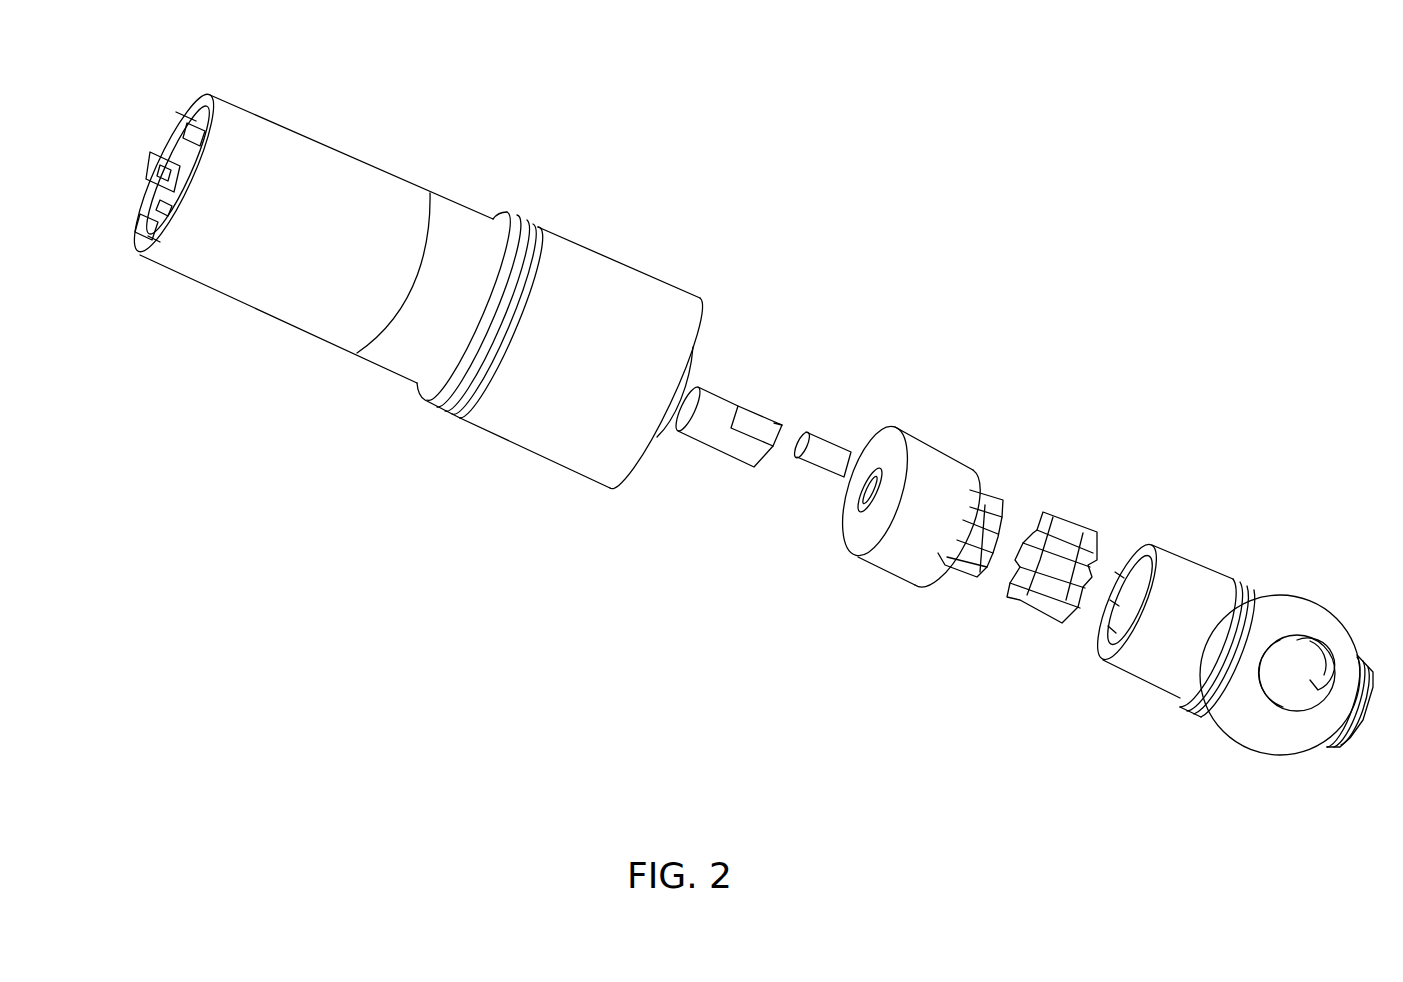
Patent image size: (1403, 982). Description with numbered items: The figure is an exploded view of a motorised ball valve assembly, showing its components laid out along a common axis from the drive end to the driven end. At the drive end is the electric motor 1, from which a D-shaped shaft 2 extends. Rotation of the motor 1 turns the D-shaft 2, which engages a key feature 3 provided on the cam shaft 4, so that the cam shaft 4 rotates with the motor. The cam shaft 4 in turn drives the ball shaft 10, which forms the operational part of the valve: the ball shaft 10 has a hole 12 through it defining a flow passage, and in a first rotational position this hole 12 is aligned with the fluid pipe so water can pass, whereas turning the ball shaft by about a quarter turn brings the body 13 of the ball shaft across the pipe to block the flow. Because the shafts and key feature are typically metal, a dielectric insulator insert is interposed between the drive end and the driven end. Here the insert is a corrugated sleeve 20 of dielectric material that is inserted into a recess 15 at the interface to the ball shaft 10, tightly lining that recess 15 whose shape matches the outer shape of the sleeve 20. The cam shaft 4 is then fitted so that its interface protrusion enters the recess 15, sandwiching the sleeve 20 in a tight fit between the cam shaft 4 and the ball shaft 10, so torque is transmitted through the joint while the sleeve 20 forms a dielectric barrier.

The electric motor 1 is at (283, 157).
The D-shaped shaft 2 is at (717, 435).
The key feature 3 is at (828, 455).
The cam shaft 4 is at (887, 545).
The corrugated sleeve 20 is at (1040, 603).
The recess 15 is at (1132, 600).
The ball shaft 10 is at (1223, 663).
The hole 12 is at (1297, 667).
The body 13 is at (1252, 745).